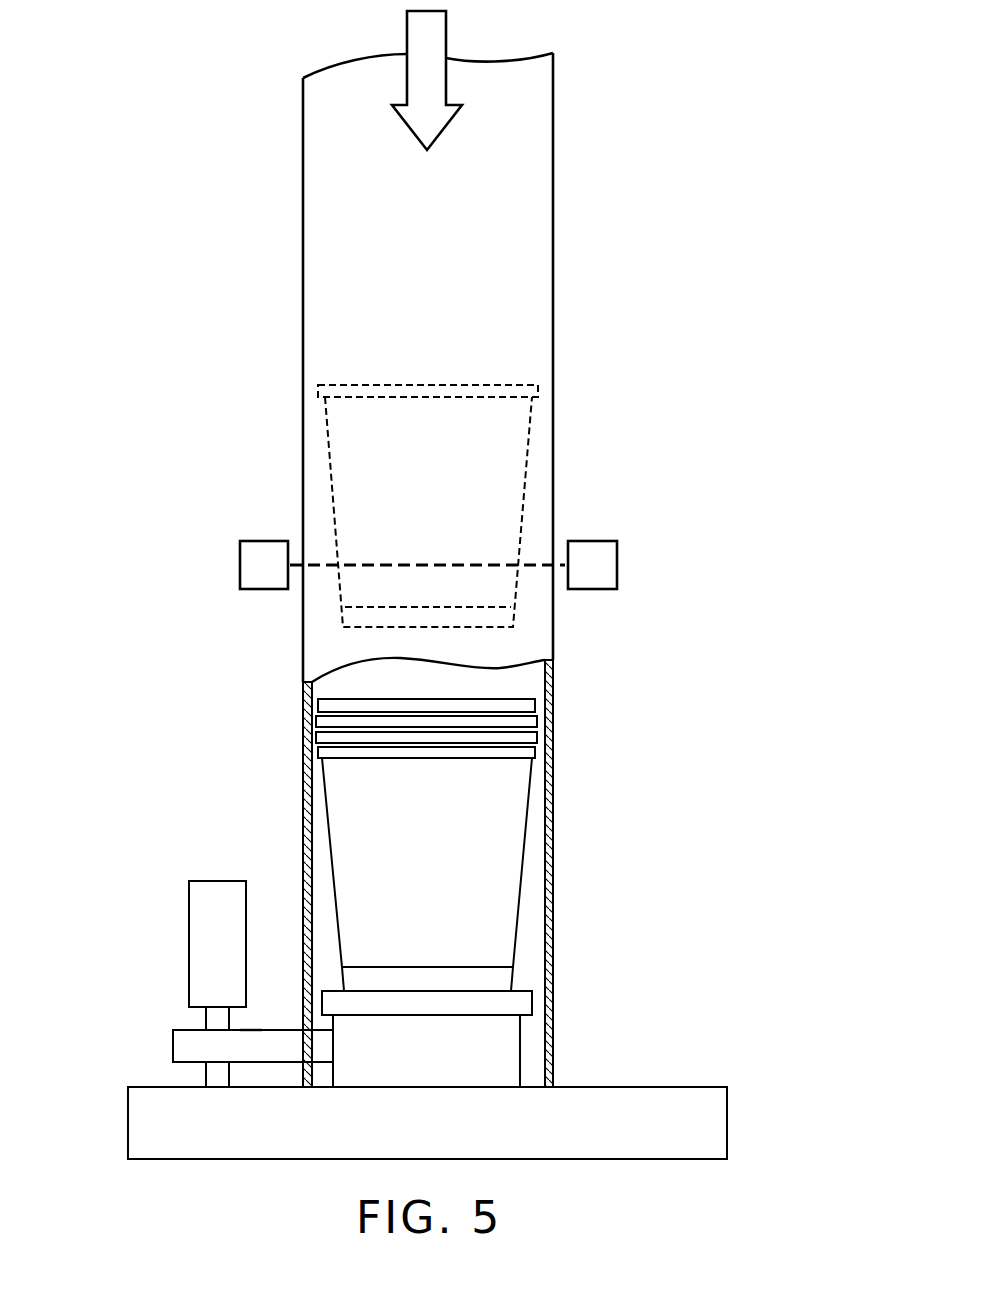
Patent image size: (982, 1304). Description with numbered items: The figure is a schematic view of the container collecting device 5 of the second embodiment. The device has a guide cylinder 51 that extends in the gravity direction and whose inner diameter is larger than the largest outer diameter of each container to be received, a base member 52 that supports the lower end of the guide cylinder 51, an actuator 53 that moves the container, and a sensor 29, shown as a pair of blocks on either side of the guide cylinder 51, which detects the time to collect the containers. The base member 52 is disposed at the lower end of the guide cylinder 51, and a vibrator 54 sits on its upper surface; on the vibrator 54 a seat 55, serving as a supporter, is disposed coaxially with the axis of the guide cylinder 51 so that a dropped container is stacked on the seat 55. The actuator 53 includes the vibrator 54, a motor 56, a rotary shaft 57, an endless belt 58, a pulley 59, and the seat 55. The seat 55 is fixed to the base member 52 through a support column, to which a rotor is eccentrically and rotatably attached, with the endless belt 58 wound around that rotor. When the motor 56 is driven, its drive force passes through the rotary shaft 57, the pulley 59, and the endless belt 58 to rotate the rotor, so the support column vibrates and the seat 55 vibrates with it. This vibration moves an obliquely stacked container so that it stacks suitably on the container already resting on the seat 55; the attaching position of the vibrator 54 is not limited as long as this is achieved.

The container collecting device 5 is at (554, 126).
The sensor 29 is at (245, 541).
The guide cylinder 51 is at (303, 190).
The base member 52 is at (128, 1125).
The actuator 53 is at (522, 1038).
The vibrator 54 is at (495, 1053).
The seat 55 is at (526, 991).
The motor 56 is at (215, 881).
The rotary shaft 57 is at (215, 1017).
The endless belt 58 is at (173, 1047).
The pulley 59 is at (249, 1029).